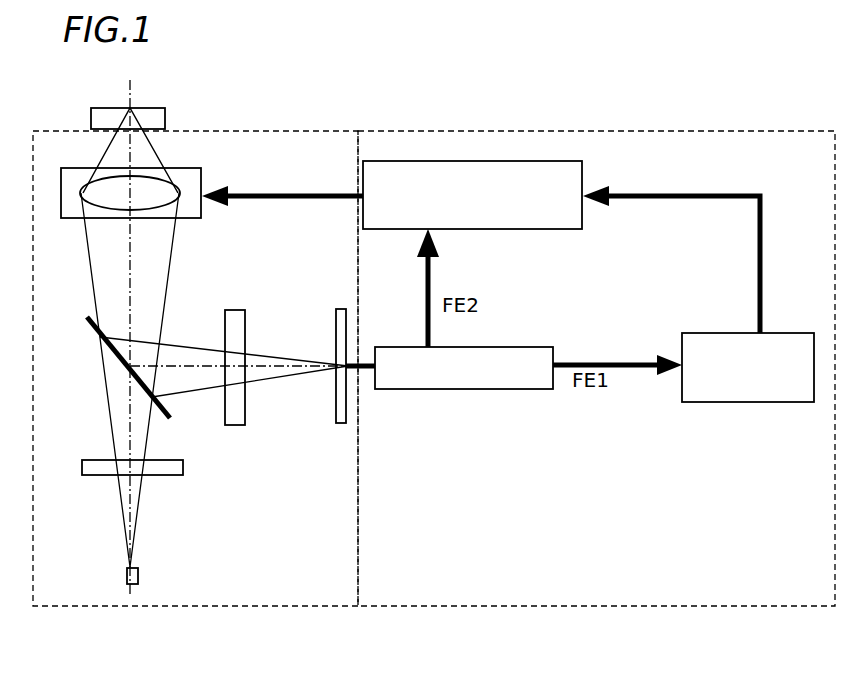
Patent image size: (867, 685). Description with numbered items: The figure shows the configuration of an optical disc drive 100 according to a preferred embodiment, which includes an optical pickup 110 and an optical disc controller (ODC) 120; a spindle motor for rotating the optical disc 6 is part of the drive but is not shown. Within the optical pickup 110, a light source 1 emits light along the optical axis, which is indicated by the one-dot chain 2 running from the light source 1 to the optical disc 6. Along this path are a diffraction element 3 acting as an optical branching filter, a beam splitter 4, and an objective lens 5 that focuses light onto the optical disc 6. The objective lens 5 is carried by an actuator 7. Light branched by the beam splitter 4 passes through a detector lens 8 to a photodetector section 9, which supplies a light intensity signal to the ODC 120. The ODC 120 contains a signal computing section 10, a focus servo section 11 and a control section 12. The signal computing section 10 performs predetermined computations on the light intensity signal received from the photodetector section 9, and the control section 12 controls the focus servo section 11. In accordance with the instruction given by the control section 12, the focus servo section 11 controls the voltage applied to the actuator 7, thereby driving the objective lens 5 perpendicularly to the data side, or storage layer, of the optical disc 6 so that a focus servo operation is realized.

The light source 1 is at (127, 580).
The one-dot chain 2 is at (130, 490).
The diffraction element 3 is at (105, 458).
The beam splitter 4 is at (93, 328).
The objective lens 5 is at (93, 192).
The optical disc 6 is at (158, 107).
The actuator 7 is at (190, 175).
The detector lens 8 is at (233, 417).
The photodetector section 9 is at (342, 425).
The signal computing section 10 is at (427, 389).
The focus servo section 11 is at (553, 158).
The control section 12 is at (718, 402).
The optical disc drive 100 is at (434, 351).
The optical pickup 110 is at (150, 606).
The optical disc controller (ODC) 120 is at (535, 606).